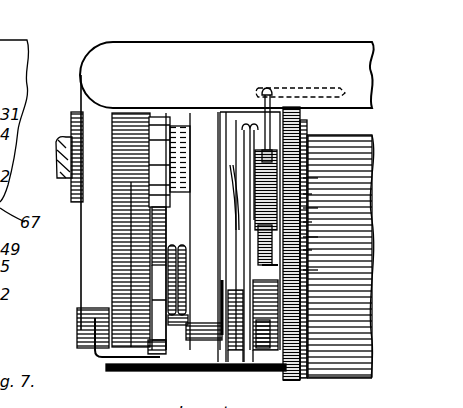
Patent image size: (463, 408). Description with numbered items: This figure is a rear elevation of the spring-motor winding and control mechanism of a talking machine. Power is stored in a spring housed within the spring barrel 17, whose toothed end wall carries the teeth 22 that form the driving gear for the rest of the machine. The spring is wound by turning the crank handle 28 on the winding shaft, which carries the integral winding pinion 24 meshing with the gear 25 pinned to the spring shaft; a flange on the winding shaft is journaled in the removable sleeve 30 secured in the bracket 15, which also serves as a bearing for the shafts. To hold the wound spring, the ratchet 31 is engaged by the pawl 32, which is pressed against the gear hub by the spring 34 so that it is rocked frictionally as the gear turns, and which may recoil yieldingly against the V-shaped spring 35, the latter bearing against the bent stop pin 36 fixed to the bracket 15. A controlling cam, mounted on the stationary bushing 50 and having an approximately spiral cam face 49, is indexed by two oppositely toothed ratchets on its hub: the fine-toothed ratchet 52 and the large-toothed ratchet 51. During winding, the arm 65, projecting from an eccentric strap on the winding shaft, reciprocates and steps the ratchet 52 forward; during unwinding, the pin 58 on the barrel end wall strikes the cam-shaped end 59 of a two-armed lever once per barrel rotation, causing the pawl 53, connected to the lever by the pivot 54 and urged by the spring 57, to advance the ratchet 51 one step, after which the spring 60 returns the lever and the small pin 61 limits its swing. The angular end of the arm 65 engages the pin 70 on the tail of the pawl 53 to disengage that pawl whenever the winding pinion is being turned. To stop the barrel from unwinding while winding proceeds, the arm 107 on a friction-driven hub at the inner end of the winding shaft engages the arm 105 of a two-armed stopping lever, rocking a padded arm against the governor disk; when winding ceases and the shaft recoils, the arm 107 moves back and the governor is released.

The sleeve 30 is at (76, 112).
The crank handle 28 is at (58, 174).
The winding pinion 24 is at (130, 120).
The ratchet 31 is at (165, 118).
The pawl 32 is at (170, 226).
The arm 65 is at (232, 128).
The bracket 15 is at (220, 298).
The pin 36 is at (93, 348).
The gear 25 is at (114, 372).
The spring 35 is at (166, 343).
The spring 34 is at (172, 325).
The arm 107 is at (268, 150).
The arm 105 is at (318, 88).
The spring 60 is at (305, 168).
The spring barrel 17 is at (364, 372).
The cam-shaped end 59 is at (303, 181).
The pin 61 is at (303, 195).
The pawl 53 is at (303, 210).
The pin 58 is at (303, 223).
The pivot 54 is at (303, 238).
The spring 57 is at (303, 252).
The pin 70 is at (303, 272).
The teeth 22 is at (298, 388).
The bushing 50 is at (267, 324).
The ratchet 51 is at (222, 352).
The cam face 49 is at (233, 354).
The ratchet 52 is at (247, 358).